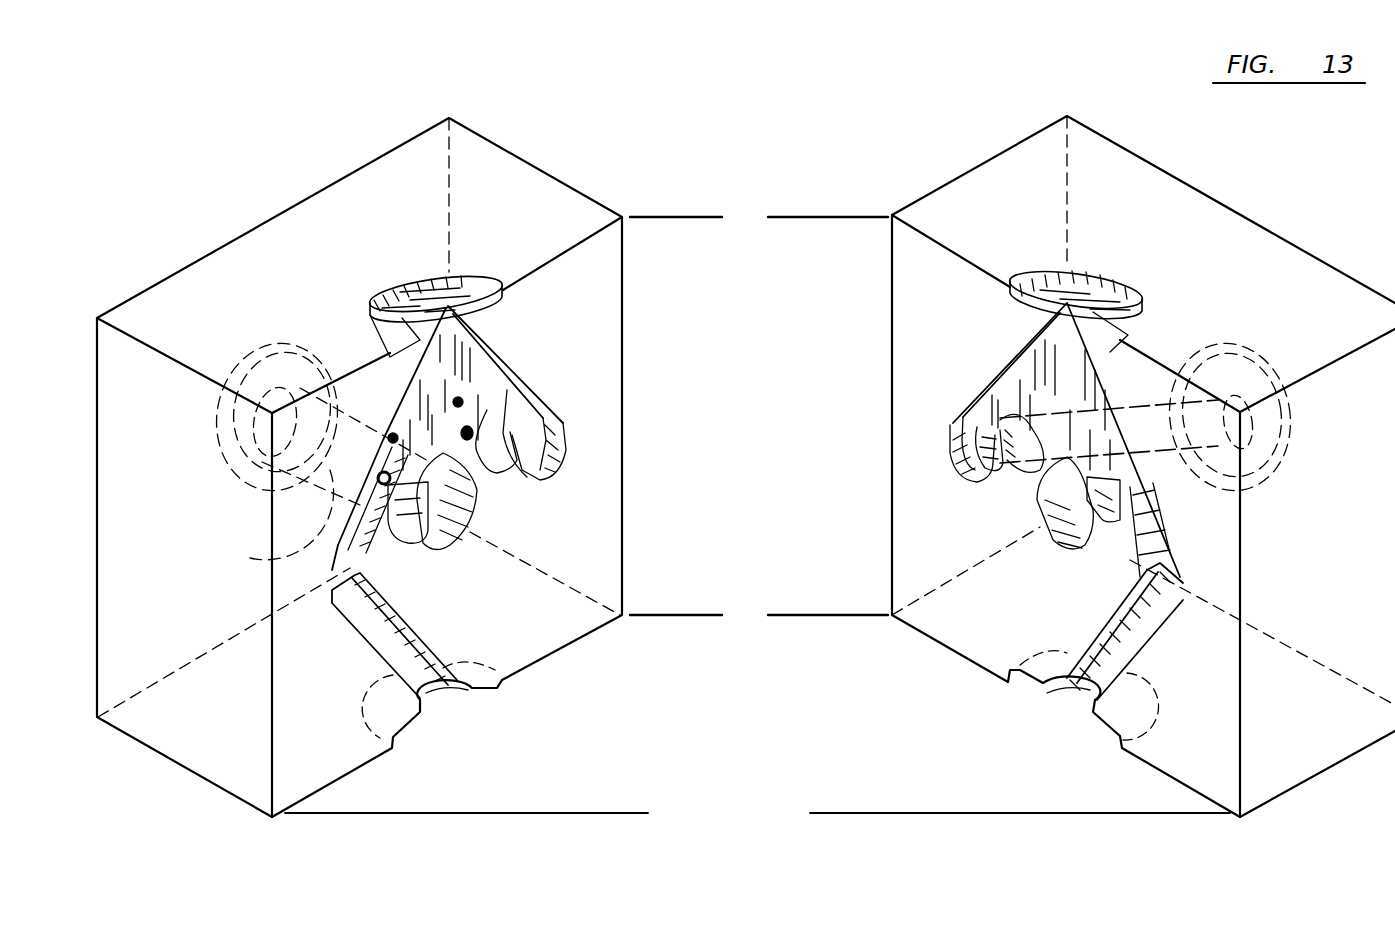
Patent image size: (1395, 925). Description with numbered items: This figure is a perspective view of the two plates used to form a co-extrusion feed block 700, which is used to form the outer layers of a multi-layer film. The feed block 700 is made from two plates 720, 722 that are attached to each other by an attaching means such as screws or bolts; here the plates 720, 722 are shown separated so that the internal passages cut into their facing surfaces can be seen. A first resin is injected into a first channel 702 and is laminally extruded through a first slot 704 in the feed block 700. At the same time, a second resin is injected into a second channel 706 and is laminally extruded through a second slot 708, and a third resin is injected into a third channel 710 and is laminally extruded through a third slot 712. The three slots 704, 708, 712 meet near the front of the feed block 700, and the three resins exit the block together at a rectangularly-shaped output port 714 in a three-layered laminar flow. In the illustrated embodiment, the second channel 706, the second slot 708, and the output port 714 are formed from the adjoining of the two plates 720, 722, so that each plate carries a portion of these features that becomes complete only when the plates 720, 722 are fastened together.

The co-extrusion feed block 700 is at (820, 150).
The first channel 702 is at (235, 373).
The first slot 704 is at (277, 550).
The second channel 706 is at (442, 702).
The second slot 708 is at (430, 647).
The third channel 710 is at (1303, 448).
The third slot 712 is at (1168, 455).
The output port 714 is at (470, 295).
The plate 720 is at (262, 227).
The plate 722 is at (1297, 247).